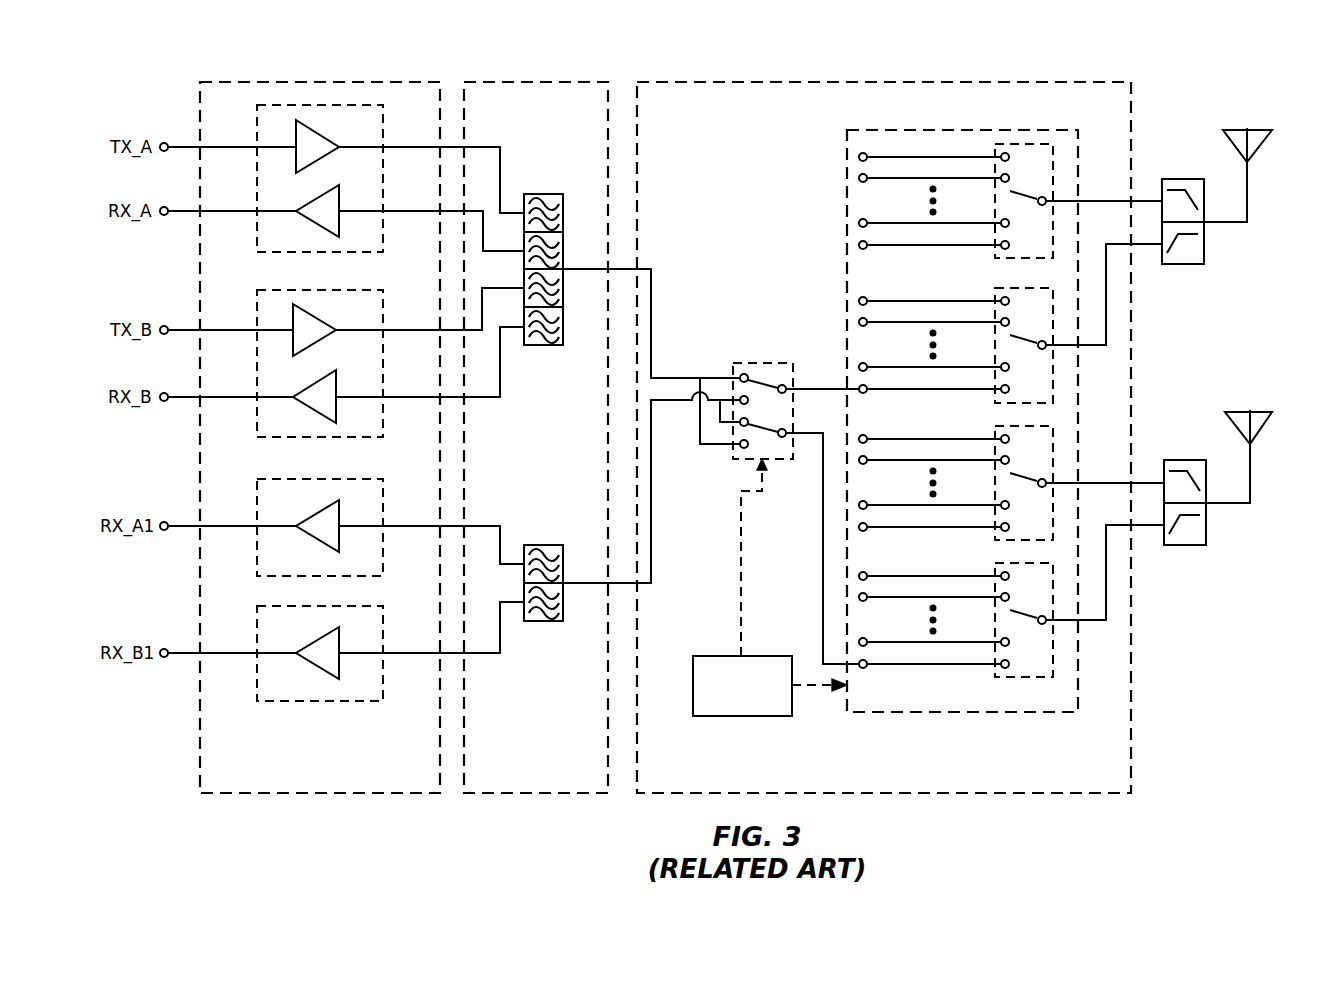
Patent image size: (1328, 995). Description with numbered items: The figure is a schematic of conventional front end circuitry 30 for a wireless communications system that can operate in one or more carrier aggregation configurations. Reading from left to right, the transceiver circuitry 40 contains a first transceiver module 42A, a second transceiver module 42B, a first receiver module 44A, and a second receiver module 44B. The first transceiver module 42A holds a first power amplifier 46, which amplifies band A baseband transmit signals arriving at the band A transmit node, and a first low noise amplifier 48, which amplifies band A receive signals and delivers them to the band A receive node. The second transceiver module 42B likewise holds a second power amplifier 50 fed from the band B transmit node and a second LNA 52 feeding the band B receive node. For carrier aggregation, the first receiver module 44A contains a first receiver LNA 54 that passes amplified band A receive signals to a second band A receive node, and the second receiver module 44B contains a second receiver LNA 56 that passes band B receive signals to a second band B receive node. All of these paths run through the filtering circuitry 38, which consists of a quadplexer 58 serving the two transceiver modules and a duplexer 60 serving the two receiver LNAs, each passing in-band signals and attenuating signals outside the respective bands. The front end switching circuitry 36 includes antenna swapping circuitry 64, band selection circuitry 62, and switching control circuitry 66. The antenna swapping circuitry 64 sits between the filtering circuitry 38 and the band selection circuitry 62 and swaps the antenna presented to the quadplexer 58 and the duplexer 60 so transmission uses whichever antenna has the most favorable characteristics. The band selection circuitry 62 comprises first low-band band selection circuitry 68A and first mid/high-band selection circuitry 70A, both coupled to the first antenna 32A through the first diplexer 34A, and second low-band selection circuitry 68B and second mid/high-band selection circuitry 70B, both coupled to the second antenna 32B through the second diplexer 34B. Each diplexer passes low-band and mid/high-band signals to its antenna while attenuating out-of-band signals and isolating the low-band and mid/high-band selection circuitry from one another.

The conventional front end circuitry 30 is at (908, 41).
The first antenna 32A is at (1255, 130).
The second antenna 32B is at (1258, 412).
The first diplexer 34A is at (1185, 264).
The second diplexer 34B is at (1187, 545).
The front end switching circuitry 36 is at (884, 437).
The filtering circuitry 38 is at (536, 437).
The transceiver circuitry 40 is at (320, 437).
The first transceiver module 42A is at (345, 252).
The second transceiver module 42B is at (345, 437).
The first receiver module 44A is at (340, 576).
The second receiver module 44B is at (340, 701).
The first power amplifier 46 is at (318, 135).
The first low noise amplifier 48 is at (312, 199).
The second power amplifier 50 is at (316, 318).
The second LNA 52 is at (309, 384).
The first receiver LNA 54 is at (317, 516).
The second receiver LNA 56 is at (320, 640).
The quadplexer 58 is at (543, 345).
The duplexer 60 is at (543, 621).
The band selection circuitry 62 is at (952, 130).
The antenna swapping circuitry 64 is at (764, 363).
The switching control circuitry 66 is at (765, 656).
The first low-band band selection circuitry 68A is at (1017, 259).
The second low-band selection circuitry 68B is at (1017, 541).
The first mid/high-band selection circuitry 70A is at (1017, 403).
The second mid/high-band selection circuitry 70B is at (1020, 678).